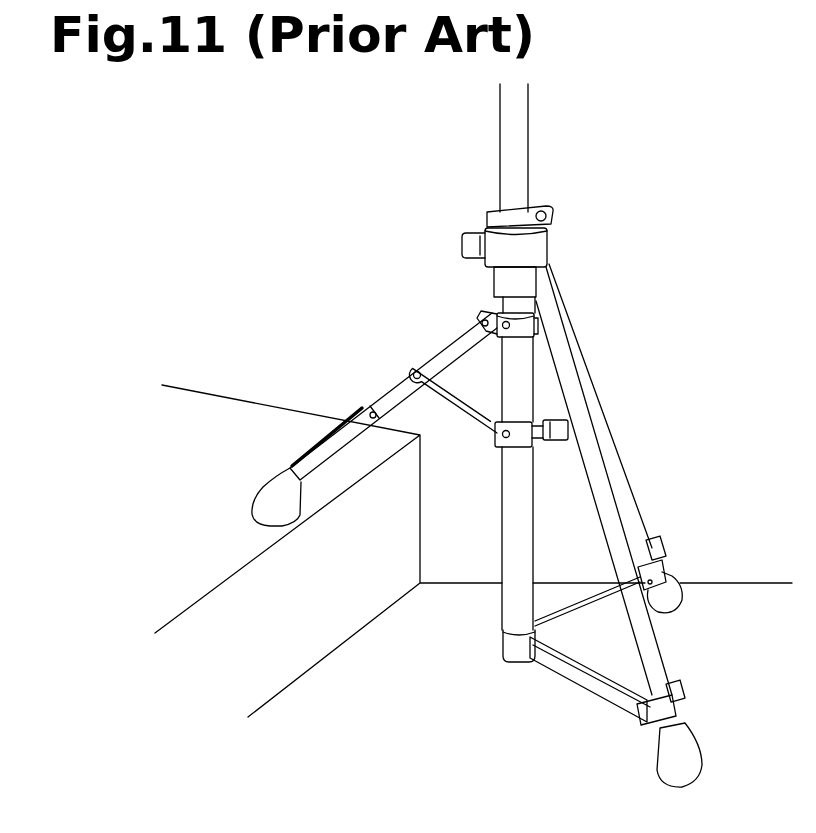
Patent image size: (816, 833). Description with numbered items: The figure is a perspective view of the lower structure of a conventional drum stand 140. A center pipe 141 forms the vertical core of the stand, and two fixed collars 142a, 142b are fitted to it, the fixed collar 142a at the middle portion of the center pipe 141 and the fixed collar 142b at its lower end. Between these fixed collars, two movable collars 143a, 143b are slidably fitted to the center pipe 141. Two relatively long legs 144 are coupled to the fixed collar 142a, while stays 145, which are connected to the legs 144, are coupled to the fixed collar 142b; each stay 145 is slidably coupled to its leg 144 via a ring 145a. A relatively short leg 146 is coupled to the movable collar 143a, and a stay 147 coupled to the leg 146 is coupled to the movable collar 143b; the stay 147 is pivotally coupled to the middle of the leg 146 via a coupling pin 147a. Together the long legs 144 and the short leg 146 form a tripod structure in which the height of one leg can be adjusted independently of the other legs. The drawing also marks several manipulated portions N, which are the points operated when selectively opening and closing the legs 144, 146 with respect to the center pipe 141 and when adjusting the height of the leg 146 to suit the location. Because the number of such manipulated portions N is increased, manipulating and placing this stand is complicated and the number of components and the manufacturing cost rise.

The drum stand 140 is at (643, 168).
The center pipe 141 is at (507, 540).
The fixed collar 142a is at (537, 245).
The fixed collar 142b is at (510, 640).
The movable collar 143a is at (497, 316).
The movable collar 143b is at (497, 441).
The leg 144 is at (602, 435).
The stay 145 is at (592, 663).
The ring 145a is at (662, 556).
The leg 146 is at (383, 395).
The stay 147 is at (459, 410).
The coupling pin 147a is at (416, 371).
The manipulated portion N is at (537, 336).